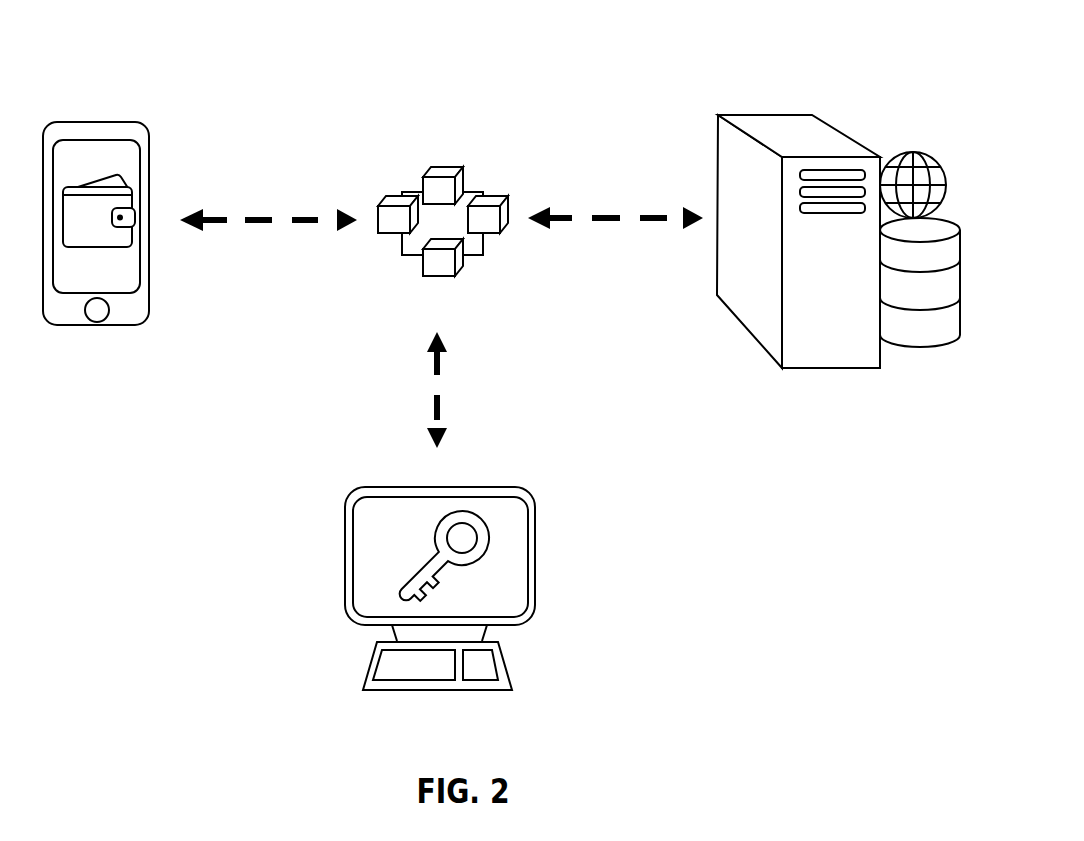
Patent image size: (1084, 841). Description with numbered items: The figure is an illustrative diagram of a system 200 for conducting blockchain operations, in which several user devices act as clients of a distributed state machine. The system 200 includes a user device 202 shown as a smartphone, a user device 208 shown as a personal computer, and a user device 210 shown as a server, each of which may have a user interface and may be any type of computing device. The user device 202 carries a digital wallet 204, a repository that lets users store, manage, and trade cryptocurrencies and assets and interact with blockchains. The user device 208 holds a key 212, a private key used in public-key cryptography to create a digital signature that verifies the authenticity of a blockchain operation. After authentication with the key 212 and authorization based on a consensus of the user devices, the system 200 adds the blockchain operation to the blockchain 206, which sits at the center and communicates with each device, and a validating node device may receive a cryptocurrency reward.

The system 200 is at (428, 52).
The user device 202 is at (124, 240).
The digital wallet 204 is at (128, 166).
The blockchain 206 is at (478, 288).
The user device 208 is at (473, 576).
The user device 210 is at (800, 97).
The key 212 is at (414, 520).